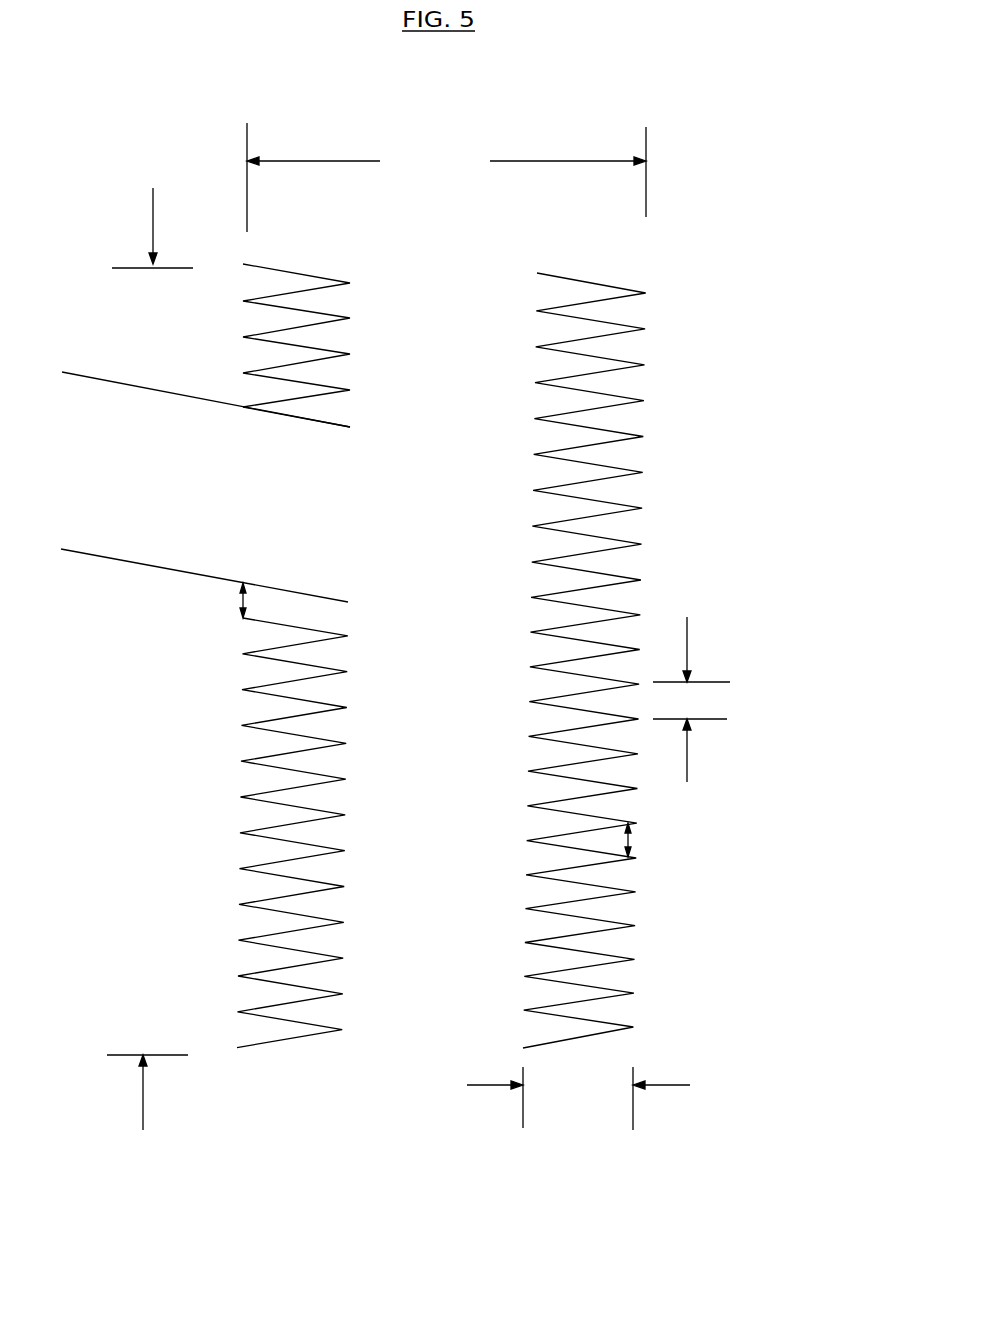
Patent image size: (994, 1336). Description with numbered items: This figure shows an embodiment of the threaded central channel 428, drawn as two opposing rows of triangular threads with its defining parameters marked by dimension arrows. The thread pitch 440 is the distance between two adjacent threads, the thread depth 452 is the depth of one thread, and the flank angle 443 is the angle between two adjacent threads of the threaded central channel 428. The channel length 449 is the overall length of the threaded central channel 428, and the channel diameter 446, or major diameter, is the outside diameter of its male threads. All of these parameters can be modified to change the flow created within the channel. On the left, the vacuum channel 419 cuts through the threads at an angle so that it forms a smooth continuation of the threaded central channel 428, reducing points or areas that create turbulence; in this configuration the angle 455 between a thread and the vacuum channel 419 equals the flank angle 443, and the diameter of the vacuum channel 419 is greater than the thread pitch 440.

The channel length 449 is at (156, 179).
The channel diameter 446 is at (449, 202).
The vacuum channel 419 is at (188, 507).
The angle 455 is at (223, 599).
The thread pitch 440 is at (753, 639).
The flank angle 443 is at (637, 835).
The thread depth 452 is at (780, 1126).
The threaded central channel 428 is at (443, 1264).